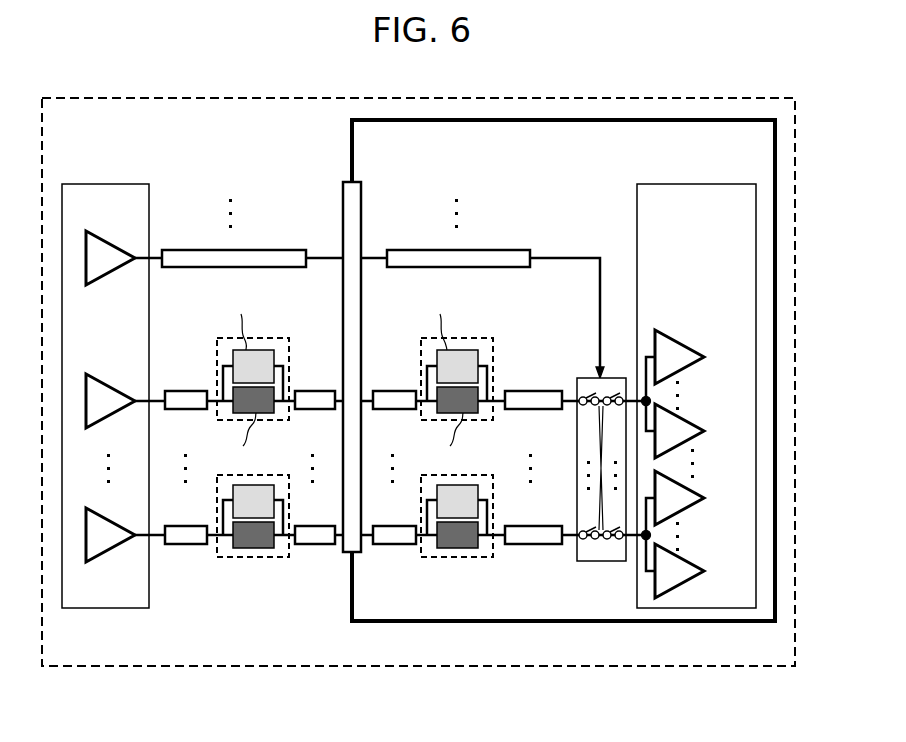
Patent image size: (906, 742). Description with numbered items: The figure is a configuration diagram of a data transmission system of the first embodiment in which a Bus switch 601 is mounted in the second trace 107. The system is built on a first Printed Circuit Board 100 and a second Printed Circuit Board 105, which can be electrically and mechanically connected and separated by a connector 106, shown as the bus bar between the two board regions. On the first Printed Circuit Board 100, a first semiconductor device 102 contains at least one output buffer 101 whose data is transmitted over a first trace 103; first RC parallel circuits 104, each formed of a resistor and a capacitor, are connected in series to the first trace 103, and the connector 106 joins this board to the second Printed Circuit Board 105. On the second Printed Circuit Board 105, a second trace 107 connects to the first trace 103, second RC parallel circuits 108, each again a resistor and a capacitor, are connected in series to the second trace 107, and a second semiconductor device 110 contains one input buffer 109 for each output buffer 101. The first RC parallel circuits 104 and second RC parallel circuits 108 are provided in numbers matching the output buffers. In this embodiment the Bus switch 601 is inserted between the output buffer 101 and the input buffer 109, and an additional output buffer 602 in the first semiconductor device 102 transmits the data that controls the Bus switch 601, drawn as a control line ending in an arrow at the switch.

The first Printed Circuit Board 100 is at (541, 667).
The output buffer 101 is at (100, 376).
The first semiconductor device 102 is at (98, 184).
The first trace 103 is at (174, 250).
The first RC parallel circuits 104 is at (281, 338).
The second Printed Circuit Board 105 is at (447, 622).
The connector 106 is at (343, 190).
The second trace 107 is at (509, 250).
The second RC parallel circuits 108 is at (483, 338).
The input buffer 109 is at (692, 366).
The second semiconductor device 110 is at (686, 184).
The Bus switch 601 is at (578, 378).
The output buffer 602 is at (111, 237).